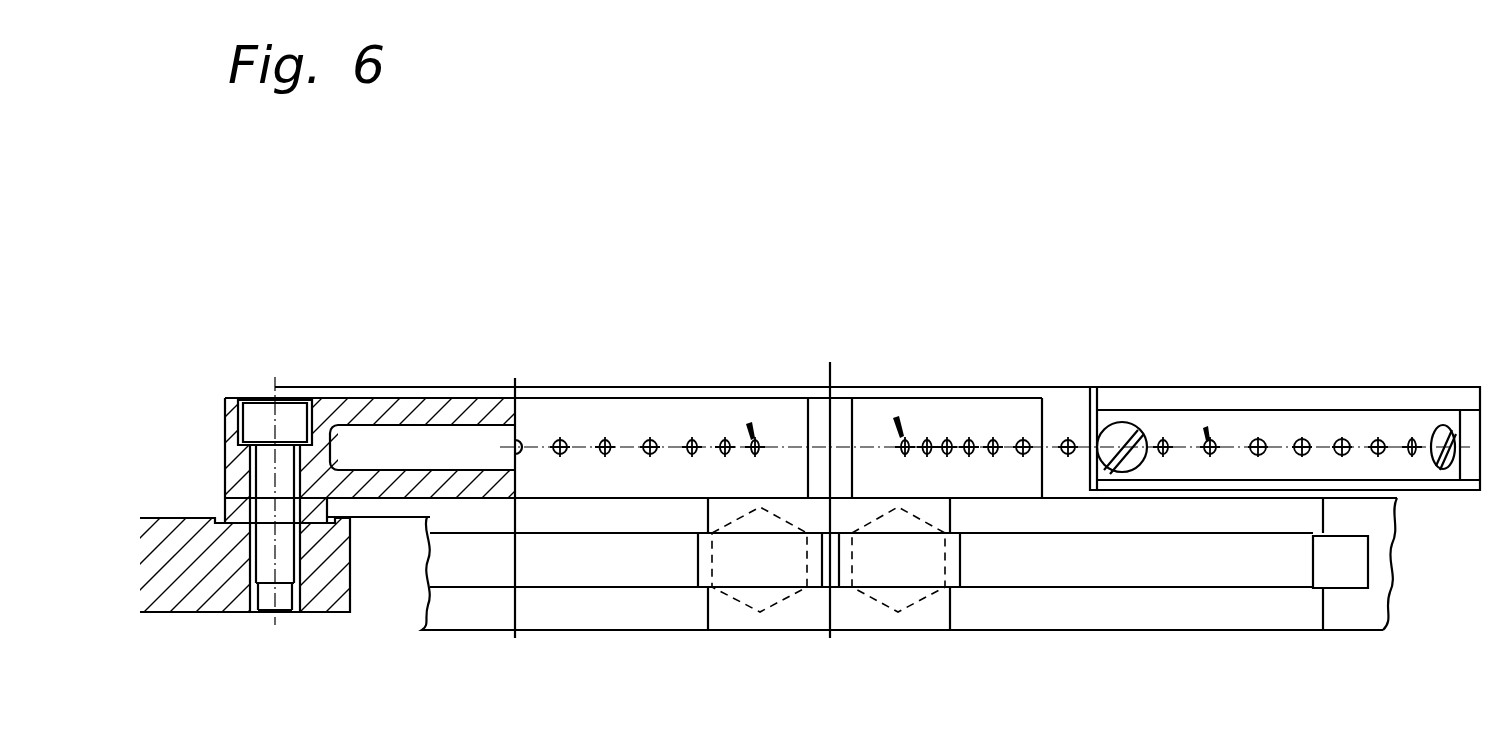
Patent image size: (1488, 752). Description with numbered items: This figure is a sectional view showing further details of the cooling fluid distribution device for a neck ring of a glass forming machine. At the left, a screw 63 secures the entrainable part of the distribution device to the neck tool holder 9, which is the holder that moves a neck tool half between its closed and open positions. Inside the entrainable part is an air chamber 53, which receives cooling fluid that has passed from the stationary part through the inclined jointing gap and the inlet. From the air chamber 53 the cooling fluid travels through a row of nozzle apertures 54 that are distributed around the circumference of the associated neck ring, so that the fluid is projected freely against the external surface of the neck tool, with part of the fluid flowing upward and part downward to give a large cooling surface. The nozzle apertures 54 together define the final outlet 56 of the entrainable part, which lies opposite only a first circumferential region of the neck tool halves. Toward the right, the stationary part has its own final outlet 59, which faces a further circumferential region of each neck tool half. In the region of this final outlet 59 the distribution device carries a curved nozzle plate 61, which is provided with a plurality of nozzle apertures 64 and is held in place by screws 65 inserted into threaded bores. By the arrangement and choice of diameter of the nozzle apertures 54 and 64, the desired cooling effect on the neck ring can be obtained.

The neck tool holder 9 is at (173, 516).
The air chamber 53 is at (402, 437).
The nozzle apertures 54 is at (692, 440).
The final outlet 56 is at (903, 435).
The final outlet 59 is at (1210, 440).
The nozzle plate 61 is at (1422, 466).
The screws 63 is at (256, 418).
The nozzle apertures 64 is at (1302, 440).
The screws 65 is at (1115, 440).